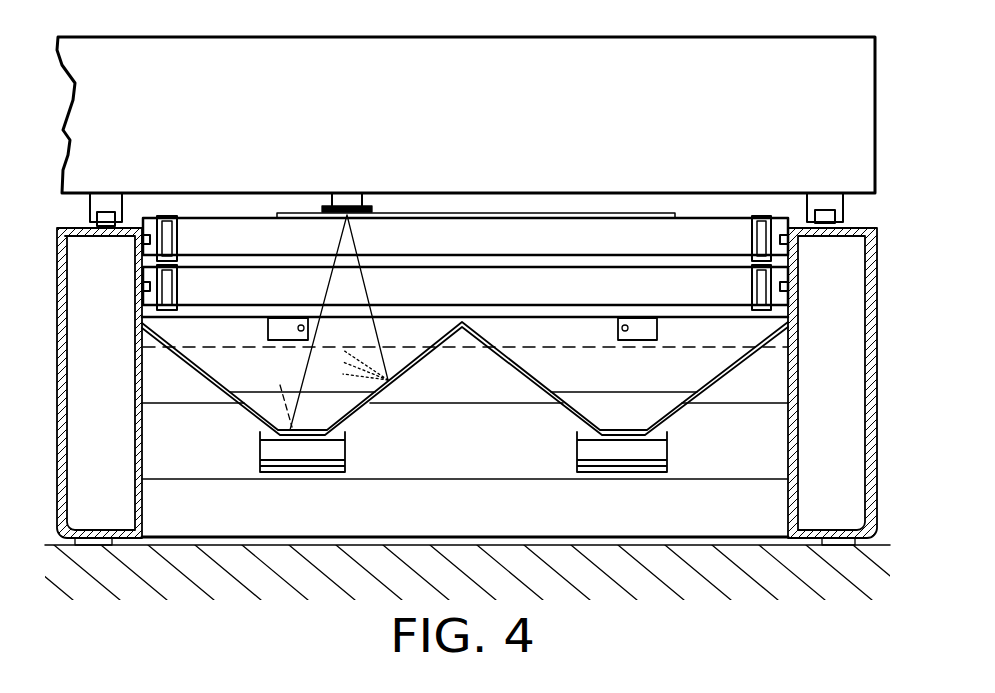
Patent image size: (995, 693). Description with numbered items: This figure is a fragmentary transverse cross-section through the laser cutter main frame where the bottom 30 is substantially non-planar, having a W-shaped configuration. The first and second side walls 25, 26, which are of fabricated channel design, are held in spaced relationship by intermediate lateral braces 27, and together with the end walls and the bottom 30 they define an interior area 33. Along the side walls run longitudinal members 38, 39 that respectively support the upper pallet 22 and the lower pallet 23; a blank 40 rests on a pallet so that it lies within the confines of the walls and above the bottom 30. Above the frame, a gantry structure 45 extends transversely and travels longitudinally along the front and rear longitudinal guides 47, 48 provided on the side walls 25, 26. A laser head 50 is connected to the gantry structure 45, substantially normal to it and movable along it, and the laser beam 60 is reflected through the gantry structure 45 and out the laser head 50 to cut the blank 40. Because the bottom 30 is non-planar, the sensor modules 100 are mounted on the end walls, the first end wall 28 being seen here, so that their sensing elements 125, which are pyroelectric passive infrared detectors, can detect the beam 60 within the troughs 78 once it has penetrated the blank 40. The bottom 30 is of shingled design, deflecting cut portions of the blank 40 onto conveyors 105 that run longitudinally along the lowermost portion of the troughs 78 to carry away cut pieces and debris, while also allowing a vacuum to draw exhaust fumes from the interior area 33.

The gantry structure 45 is at (428, 104).
The front longitudinal guide 47 is at (110, 220).
The rear longitudinal guide 48 is at (842, 207).
The laser head 50 is at (345, 195).
The blank 40 is at (477, 216).
The interior area 33 is at (571, 220).
The beam 60 is at (353, 217).
The upper pallet 22 is at (673, 254).
The lower pallet 23 is at (728, 299).
The longitudinal member 38 is at (142, 239).
The longitudinal member 39 is at (142, 287).
The first side wall 25 is at (108, 417).
The second side wall 26 is at (848, 392).
The intermediate lateral brace 27 is at (235, 517).
The first end wall 28 is at (503, 333).
The bottom 30 is at (357, 415).
The sensing element 125 is at (620, 327).
The sensor module 100 is at (657, 333).
The trough 78 is at (268, 406).
The conveyor 105 is at (285, 468).